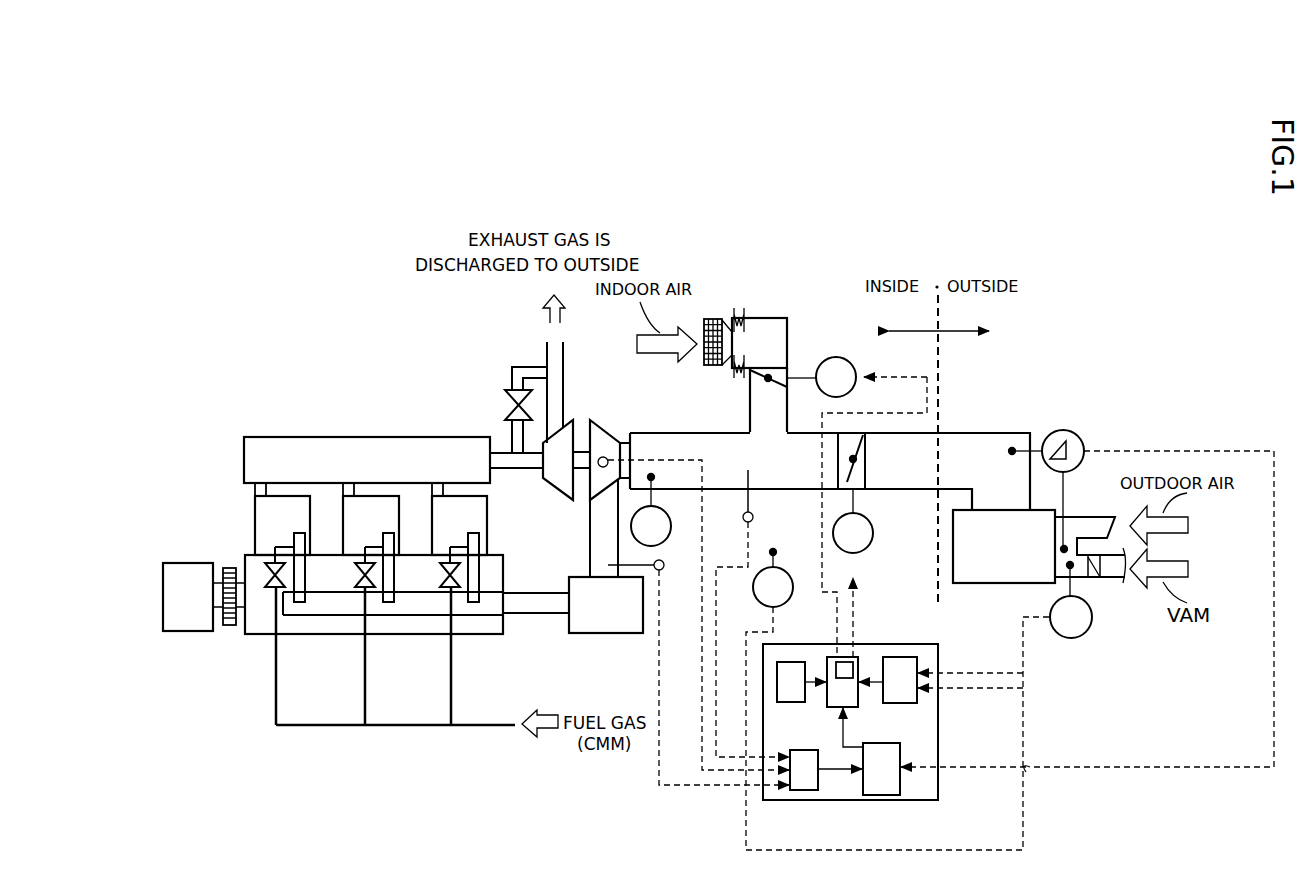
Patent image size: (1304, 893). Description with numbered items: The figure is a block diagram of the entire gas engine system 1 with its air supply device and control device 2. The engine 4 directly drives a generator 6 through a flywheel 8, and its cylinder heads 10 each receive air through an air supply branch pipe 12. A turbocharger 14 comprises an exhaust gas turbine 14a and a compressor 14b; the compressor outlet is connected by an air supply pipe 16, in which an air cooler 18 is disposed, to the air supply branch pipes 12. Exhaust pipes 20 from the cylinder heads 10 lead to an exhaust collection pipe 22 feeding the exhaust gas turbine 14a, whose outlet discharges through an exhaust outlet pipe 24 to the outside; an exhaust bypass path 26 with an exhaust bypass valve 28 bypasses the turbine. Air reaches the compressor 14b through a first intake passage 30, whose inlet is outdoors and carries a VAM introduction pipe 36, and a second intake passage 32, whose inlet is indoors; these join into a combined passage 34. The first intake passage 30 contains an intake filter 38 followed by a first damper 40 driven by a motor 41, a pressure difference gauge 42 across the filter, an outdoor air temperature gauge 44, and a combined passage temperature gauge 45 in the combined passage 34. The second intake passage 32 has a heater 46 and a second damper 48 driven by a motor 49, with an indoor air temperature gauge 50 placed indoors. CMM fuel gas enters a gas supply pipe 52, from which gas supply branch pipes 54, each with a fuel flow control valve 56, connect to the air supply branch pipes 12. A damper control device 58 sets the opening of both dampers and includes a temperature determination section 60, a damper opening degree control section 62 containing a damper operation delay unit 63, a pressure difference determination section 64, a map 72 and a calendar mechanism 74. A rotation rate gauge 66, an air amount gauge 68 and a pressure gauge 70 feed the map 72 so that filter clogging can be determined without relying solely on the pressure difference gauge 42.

The gas engine system 1 is at (365, 313).
The control device 2 is at (731, 603).
The engine 4 is at (471, 638).
The generator 6 is at (173, 575).
The flywheel 8 is at (229, 575).
The cylinder head 10 is at (255, 515).
The air supply branch pipe 12 is at (314, 550).
The turbocharger 14 is at (586, 452).
The exhaust gas turbine 14a is at (556, 482).
The compressor 14b is at (603, 440).
The air supply pipe 16 is at (525, 590).
The air cooler 18 is at (623, 637).
The exhaust pipe 20 is at (255, 490).
The exhaust collection pipe 22 is at (343, 437).
The exhaust outlet pipe 24 is at (567, 357).
The exhaust bypass path 26 is at (522, 367).
The exhaust bypass valve 28 is at (505, 388).
The first intake passage 30 is at (980, 435).
The second intake passage 32 is at (770, 328).
The combined passage 34 is at (720, 478).
The VAM introduction pipe 36 is at (1110, 568).
The intake filter 38 is at (995, 573).
The first damper 40 is at (853, 473).
The motor 41 is at (865, 553).
The pressure difference gauge 42 is at (1082, 435).
The outdoor air temperature gauge 44 is at (1068, 640).
The combined passage temperature gauge 45 is at (671, 538).
The heater 46 is at (745, 320).
The second damper 48 is at (770, 378).
The motor 49 is at (837, 357).
The indoor air temperature gauge 50 is at (790, 600).
The gas supply pipe 52 is at (478, 727).
The gas supply branch pipe 54 is at (278, 692).
The fuel flow control valve 56 is at (273, 592).
The damper control device 58 is at (893, 725).
The temperature determination section 60 is at (903, 698).
The damper opening degree control section 62 is at (869, 678).
The damper operation delay unit 63 is at (855, 668).
The pressure difference determination section 64 is at (882, 783).
The rotation rate gauge 66 is at (607, 458).
The air amount gauge 68 is at (753, 517).
The pressure gauge 70 is at (664, 568).
The map 72 is at (803, 783).
The calendar mechanism 74 is at (793, 692).